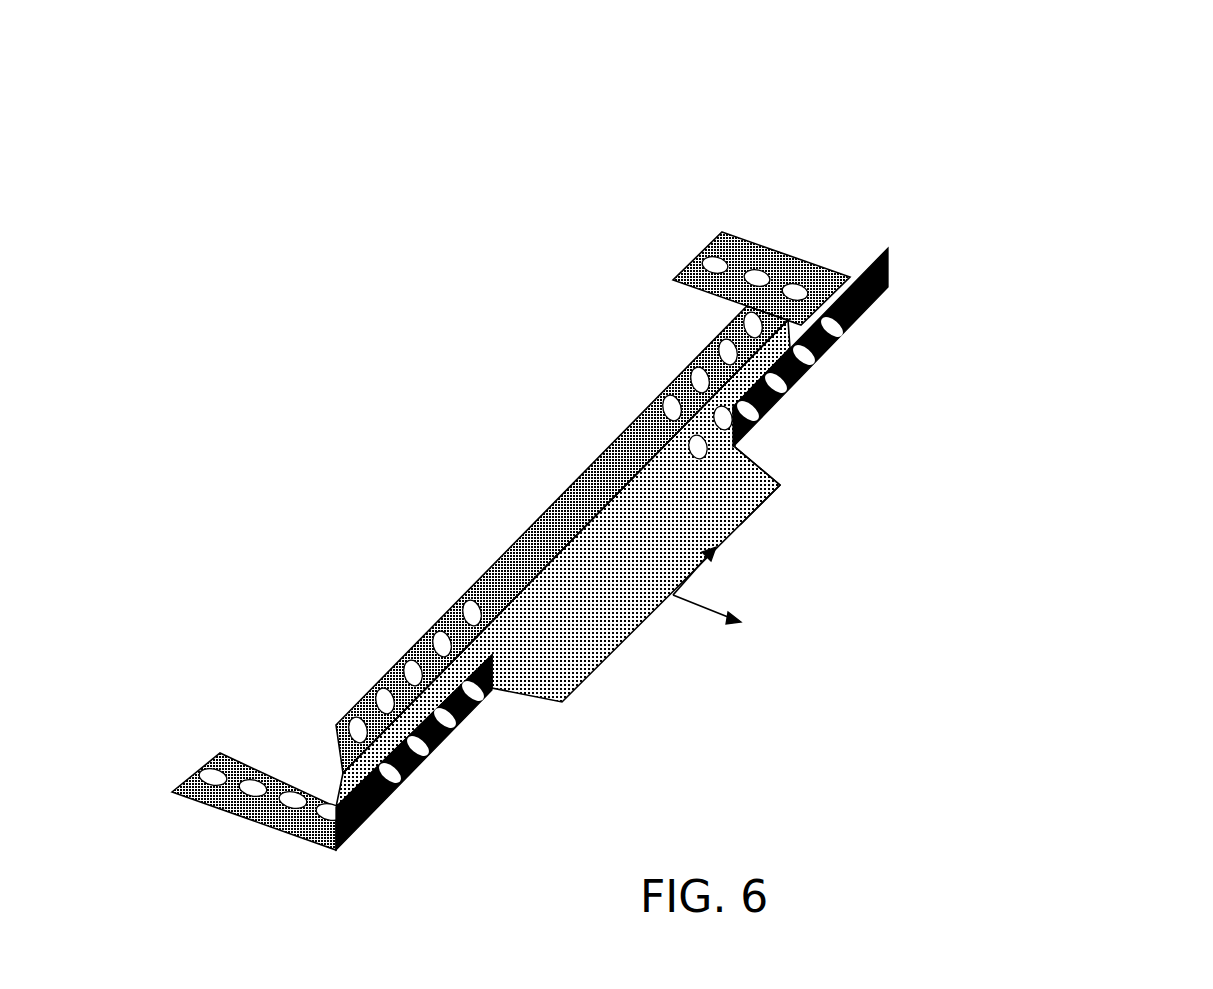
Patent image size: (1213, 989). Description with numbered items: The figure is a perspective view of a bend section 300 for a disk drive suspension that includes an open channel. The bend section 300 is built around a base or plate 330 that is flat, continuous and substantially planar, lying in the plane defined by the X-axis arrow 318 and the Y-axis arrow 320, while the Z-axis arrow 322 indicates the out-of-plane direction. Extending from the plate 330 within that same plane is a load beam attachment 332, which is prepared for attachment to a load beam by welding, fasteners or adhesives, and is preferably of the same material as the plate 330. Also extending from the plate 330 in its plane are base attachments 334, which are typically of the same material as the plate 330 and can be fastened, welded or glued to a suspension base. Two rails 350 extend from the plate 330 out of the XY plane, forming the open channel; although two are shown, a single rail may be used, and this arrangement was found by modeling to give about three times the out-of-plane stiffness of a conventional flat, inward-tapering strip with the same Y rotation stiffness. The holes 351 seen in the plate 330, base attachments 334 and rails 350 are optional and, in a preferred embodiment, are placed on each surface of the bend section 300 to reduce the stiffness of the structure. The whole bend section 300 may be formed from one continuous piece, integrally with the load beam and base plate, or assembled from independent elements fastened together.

The bend section 300 is at (669, 441).
The X-axis arrow 318 is at (737, 623).
The Y-axis arrow 320 is at (703, 573).
The Z-axis arrow 322 is at (668, 556).
The base plate 330 is at (507, 643).
The load beam attachment 332 is at (747, 475).
The base attachments 334 is at (222, 752).
The rails 350 is at (681, 374).
The holes 351 is at (380, 692).